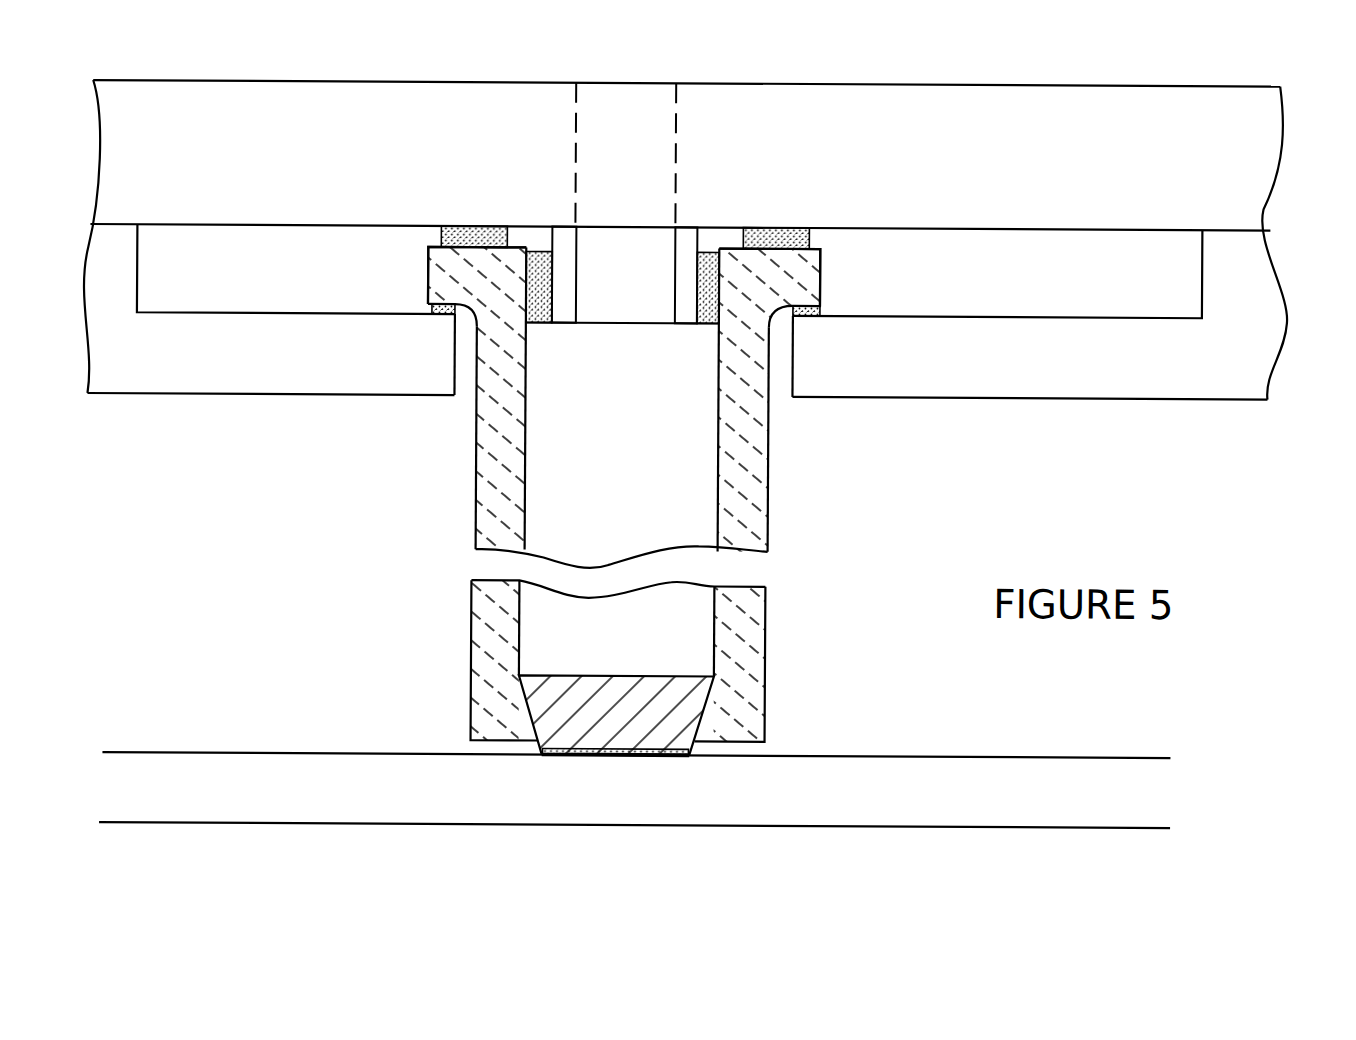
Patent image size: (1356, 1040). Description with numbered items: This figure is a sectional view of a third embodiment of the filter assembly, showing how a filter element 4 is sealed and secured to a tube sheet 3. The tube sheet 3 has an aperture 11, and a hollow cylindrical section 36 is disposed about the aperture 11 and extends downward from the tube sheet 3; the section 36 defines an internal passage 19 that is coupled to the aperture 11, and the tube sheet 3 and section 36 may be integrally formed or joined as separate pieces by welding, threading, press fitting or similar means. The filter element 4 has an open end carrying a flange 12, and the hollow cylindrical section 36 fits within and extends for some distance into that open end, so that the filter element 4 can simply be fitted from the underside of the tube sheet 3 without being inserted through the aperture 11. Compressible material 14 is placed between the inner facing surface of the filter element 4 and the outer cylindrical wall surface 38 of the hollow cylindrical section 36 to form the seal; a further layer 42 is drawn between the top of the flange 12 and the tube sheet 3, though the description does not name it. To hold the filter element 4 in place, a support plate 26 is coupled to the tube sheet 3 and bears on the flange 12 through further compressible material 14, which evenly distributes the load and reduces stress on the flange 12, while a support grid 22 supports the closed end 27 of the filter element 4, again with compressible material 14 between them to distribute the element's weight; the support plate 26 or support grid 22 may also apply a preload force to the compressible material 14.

The tube sheet 3 is at (741, 111).
The filter element 4 is at (769, 501).
The aperture 11 is at (611, 83).
The flange 12 is at (467, 257).
The compressible material 14 is at (526, 282).
The internal passage 19 is at (591, 314).
The support grid 22 is at (882, 791).
The support plate 26 is at (992, 377).
The closed end 27 is at (605, 675).
The hollow cylindrical section 36 is at (683, 240).
The outer cylindrical wall surface 38 is at (694, 297).
The braze layer 42 is at (505, 232).